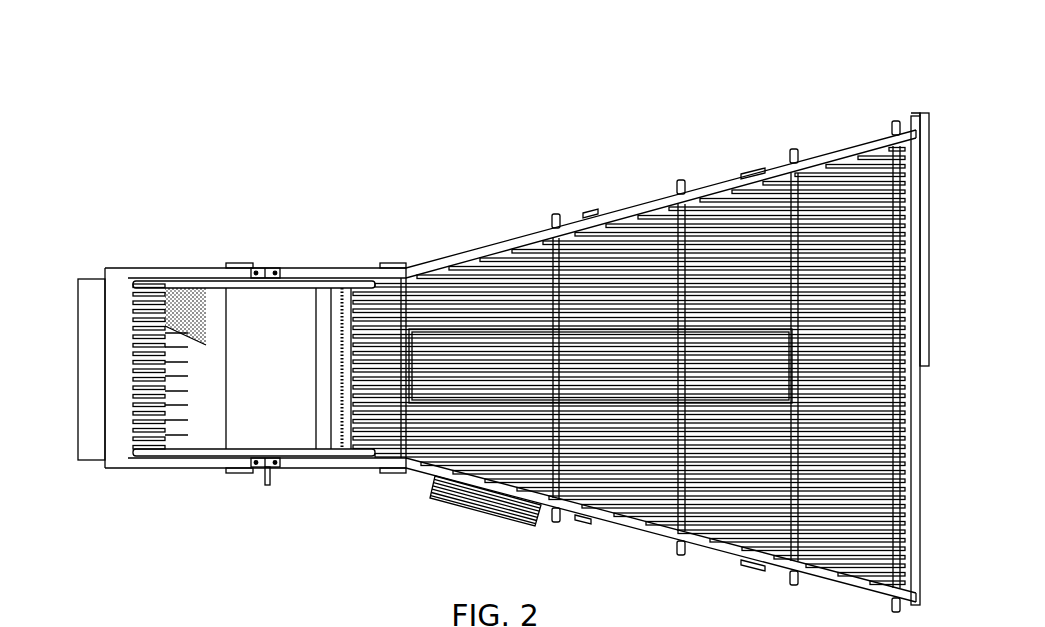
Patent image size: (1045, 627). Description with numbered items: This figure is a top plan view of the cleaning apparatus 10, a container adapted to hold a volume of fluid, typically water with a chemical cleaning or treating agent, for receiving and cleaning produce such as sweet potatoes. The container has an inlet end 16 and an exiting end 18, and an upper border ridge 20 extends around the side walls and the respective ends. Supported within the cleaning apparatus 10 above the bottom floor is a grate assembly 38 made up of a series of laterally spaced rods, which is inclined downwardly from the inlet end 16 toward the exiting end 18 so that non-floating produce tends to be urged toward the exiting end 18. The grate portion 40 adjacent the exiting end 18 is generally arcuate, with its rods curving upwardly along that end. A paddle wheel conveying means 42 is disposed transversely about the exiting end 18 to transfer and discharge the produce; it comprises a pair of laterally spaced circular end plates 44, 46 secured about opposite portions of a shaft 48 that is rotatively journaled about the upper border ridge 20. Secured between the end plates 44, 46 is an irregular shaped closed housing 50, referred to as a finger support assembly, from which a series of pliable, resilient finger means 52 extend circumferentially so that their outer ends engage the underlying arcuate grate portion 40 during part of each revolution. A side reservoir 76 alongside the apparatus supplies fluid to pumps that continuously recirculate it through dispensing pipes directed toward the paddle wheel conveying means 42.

The cleaning apparatus 10 is at (590, 181).
The inlet end 16 is at (908, 445).
The exiting end 18 is at (97, 455).
The upper border ridge 20 is at (497, 237).
The grate assembly 38 is at (815, 221).
The grate portion 40 is at (143, 397).
The paddle wheel conveying means 42 is at (222, 473).
The circular end plate 44 is at (293, 443).
The circular end plate 46 is at (300, 278).
The shaft 48 is at (256, 465).
The closed housing 50 is at (268, 312).
The finger means 52 is at (187, 410).
The side reservoir 76 is at (440, 493).